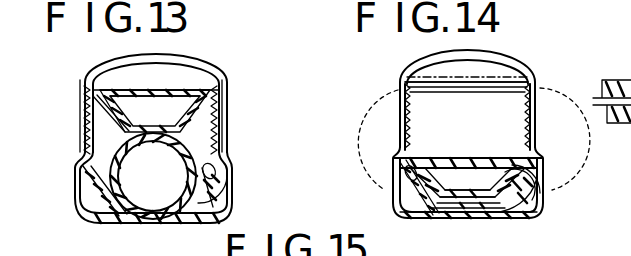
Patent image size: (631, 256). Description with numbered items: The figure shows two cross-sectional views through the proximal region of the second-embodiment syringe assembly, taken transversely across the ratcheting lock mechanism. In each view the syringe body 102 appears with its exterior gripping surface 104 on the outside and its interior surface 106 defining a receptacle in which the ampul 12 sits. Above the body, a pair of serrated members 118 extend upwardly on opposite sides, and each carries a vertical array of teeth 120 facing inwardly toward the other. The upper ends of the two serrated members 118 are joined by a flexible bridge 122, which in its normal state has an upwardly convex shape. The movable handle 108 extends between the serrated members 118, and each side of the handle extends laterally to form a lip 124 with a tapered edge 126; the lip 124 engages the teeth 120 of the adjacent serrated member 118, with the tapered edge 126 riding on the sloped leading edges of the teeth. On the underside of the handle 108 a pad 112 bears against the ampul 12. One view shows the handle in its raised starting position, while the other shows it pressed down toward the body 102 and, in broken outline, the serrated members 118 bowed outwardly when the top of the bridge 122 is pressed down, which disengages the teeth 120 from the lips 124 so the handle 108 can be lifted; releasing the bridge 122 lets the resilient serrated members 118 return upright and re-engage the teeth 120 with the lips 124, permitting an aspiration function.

In FIG. 13, the ampul 12 is at (187, 147).
In FIG. 14, the ampul 12 is at (487, 210).
In FIG. 13, the syringe body 102 is at (200, 213).
In FIG. 14, the syringe body 102 is at (530, 200).
In FIG. 13, the exterior gripping surface 104 is at (157, 223).
In FIG. 14, the exterior gripping surface 104 is at (458, 220).
In FIG. 13, the interior surface 106 is at (210, 176).
In FIG. 14, the interior surface 106 is at (407, 178).
In FIG. 13, the movable handle 108 is at (187, 88).
In FIG. 14, the movable handle 108 is at (468, 156).
In FIG. 13, the pad 112 is at (107, 118).
In FIG. 14, the pad 112 is at (541, 187).
In FIG. 13, the serrated members 118 is at (84, 140).
In FIG. 14, the serrated members 118 is at (385, 124).
In FIG. 13, the teeth 120 is at (212, 114).
In FIG. 14, the teeth 120 is at (527, 114).
In FIG. 13, the flexible bridge 122 is at (103, 64).
In FIG. 14, the flexible bridge 122 is at (413, 68).
In FIG. 13, the lip 124 is at (90, 80).
In FIG. 14, the lip 124 is at (412, 158).
In FIG. 13, the tapered edge 126 is at (95, 94).
In FIG. 14, the tapered edge 126 is at (417, 170).